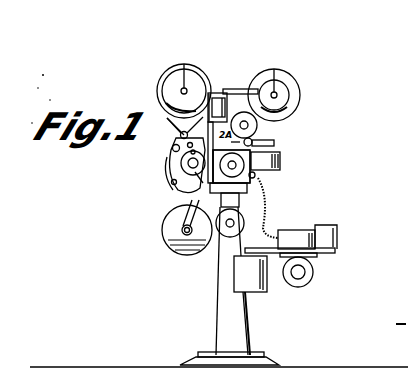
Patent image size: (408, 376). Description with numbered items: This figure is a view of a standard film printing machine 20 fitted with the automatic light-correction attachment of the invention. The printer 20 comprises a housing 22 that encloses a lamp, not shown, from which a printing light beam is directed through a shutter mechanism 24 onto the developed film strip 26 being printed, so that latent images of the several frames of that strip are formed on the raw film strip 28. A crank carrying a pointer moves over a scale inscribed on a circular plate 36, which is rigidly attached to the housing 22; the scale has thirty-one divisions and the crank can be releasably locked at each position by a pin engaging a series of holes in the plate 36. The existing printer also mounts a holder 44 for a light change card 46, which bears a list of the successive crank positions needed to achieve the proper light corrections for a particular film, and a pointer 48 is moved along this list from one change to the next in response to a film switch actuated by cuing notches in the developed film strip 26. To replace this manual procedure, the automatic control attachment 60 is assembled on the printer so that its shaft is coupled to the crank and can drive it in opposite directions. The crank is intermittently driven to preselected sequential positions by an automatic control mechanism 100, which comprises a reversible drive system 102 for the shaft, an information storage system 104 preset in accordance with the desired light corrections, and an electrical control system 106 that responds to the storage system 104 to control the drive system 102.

The film printing machine 20 is at (304, 80).
The housing 22 is at (285, 158).
The shutter mechanism 24 is at (168, 162).
The developed film strip 26 is at (248, 74).
The raw film strip 28 is at (171, 127).
The circular plate 36 is at (179, 203).
The holder 44 is at (232, 93).
The light change card 46 is at (222, 93).
The pointer 48 is at (210, 92).
The automatic control attachment 60 is at (332, 173).
The automatic control mechanism 100 is at (272, 212).
The reversible drive system 102 is at (257, 175).
The information storage system 104 is at (339, 232).
The electrical control system 106 is at (298, 227).